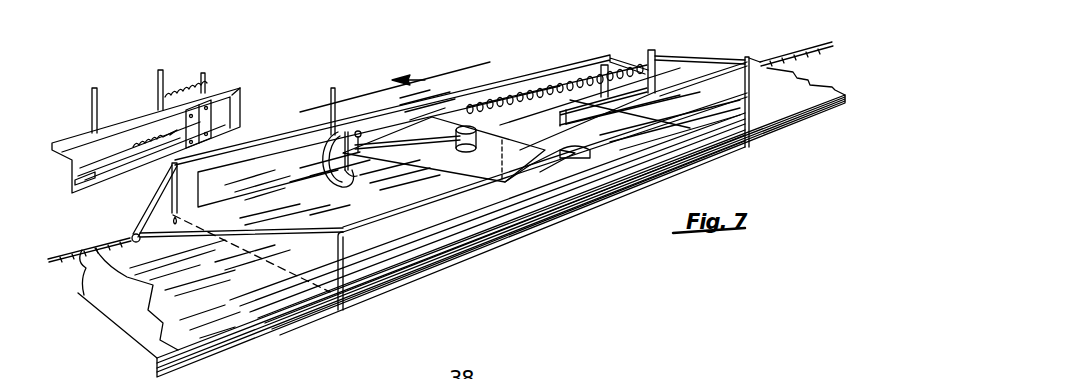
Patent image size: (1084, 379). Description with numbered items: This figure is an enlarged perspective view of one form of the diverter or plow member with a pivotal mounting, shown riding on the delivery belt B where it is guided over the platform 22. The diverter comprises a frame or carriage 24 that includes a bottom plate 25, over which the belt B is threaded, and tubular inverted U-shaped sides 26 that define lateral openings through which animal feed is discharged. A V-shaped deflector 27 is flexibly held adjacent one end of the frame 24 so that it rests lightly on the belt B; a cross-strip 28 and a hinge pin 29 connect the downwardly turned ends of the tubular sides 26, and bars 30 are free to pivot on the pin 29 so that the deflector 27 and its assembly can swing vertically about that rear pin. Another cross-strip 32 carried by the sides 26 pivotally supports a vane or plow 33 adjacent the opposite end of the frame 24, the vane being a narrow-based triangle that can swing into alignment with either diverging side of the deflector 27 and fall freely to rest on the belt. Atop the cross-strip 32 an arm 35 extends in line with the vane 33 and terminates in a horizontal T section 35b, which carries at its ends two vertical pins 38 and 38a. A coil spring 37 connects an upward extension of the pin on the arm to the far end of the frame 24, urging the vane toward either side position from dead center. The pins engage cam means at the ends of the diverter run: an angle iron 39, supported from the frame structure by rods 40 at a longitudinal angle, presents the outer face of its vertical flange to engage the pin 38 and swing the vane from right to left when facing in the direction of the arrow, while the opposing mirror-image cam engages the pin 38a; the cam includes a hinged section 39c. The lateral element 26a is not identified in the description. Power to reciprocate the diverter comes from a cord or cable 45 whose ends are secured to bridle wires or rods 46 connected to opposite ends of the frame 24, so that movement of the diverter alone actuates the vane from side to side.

The platform 22 is at (285, 318).
The delivery belt B is at (200, 309).
The cord or cable 45 is at (793, 50).
The vane or plow 33 is at (248, 187).
The bottom plate 25 is at (338, 308).
The tubular inverted U-shaped sides 26 is at (473, 193).
The frame or carriage 24 is at (570, 63).
The cross-strip 32 is at (397, 115).
The vertical pin 38 is at (328, 97).
The horizontal T section 35b is at (323, 140).
The vertical pin 38a is at (350, 172).
The arm 35 is at (433, 127).
The coil spring 37 is at (503, 93).
The bars 30 is at (620, 103).
The bracket 26a is at (575, 153).
The V-shaped deflector 27 is at (660, 135).
The bridle wires or rods 46 is at (682, 63).
The cross-strip 28 is at (680, 88).
The hinge pin 29 is at (750, 100).
The angle iron cam 39 is at (78, 135).
The rods 40 is at (157, 80).
The hinged section 39c is at (217, 82).